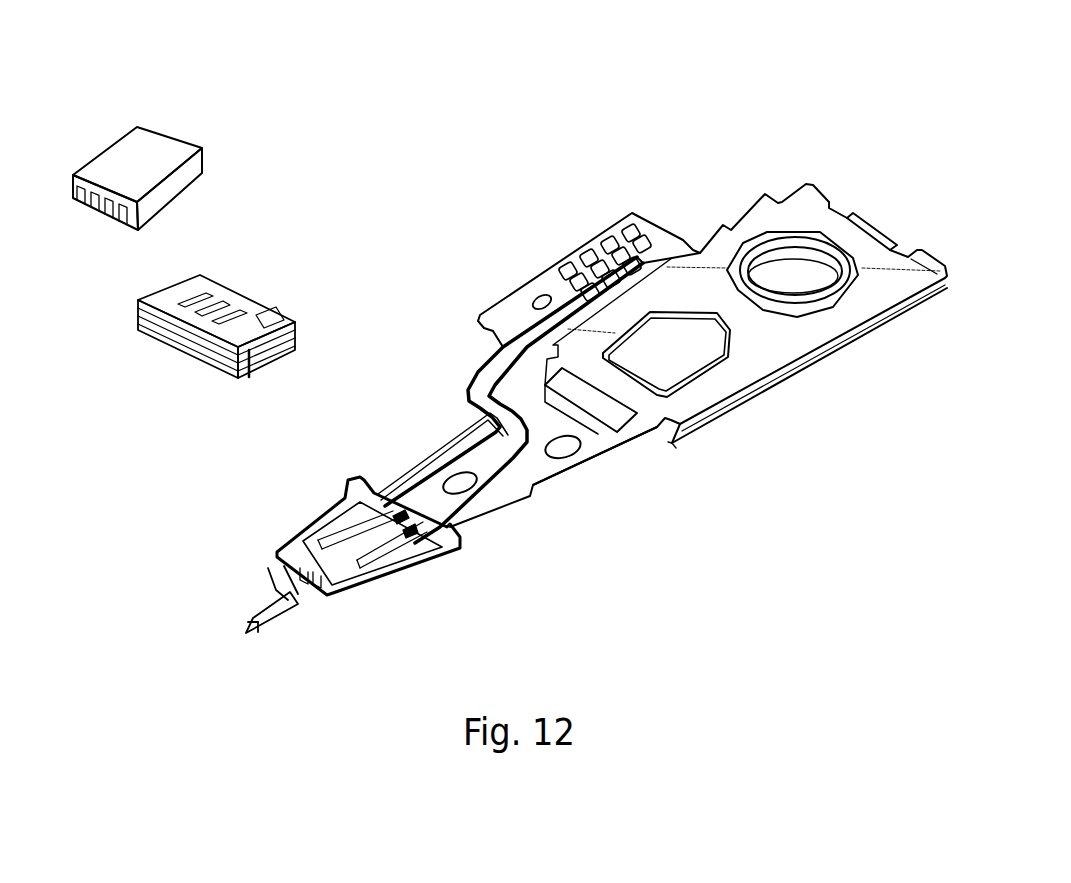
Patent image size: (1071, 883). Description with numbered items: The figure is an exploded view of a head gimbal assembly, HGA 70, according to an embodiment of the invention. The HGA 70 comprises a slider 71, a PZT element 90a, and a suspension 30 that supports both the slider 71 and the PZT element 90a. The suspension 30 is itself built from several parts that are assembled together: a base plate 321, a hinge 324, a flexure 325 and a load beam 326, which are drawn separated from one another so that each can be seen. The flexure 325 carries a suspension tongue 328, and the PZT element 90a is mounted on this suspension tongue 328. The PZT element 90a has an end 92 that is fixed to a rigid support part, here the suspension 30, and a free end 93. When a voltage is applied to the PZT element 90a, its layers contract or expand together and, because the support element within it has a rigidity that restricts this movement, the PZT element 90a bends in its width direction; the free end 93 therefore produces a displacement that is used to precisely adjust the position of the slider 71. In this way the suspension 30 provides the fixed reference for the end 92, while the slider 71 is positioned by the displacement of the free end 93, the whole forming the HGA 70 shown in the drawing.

The suspension 30 is at (624, 488).
The HGA 70 is at (485, 115).
The slider 71 is at (142, 163).
The PZT element 90a is at (192, 276).
The end 92 is at (267, 350).
The free end 93 is at (158, 285).
The base plate 321 is at (733, 403).
The hinge 324 is at (767, 350).
The flexure 325 is at (515, 310).
The load beam 326 is at (288, 618).
The suspension tongue 328 is at (373, 537).